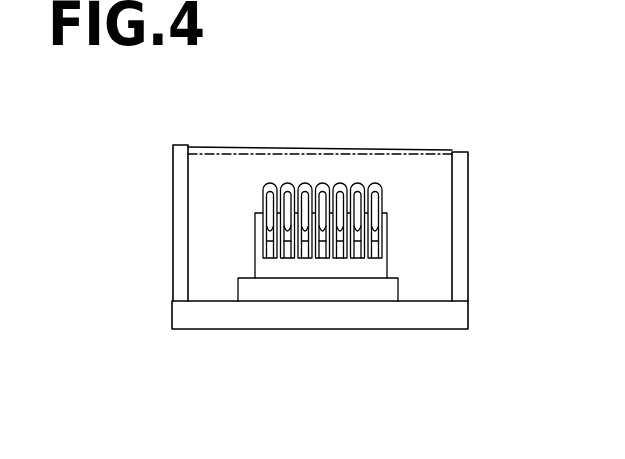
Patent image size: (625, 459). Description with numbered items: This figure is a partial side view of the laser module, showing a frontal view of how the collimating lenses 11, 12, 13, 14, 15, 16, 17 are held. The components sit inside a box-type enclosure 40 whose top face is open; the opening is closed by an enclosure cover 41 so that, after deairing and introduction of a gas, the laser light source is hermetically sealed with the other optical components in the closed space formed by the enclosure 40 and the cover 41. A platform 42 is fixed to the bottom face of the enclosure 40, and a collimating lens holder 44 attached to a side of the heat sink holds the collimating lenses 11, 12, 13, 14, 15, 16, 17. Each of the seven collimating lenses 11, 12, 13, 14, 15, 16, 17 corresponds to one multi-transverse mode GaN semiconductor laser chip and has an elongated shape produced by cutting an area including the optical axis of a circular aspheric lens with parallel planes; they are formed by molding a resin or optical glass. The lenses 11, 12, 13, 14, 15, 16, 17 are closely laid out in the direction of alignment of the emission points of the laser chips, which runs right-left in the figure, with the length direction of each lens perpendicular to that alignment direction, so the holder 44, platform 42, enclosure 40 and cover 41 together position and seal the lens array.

The collimating lens 11 is at (383, 207).
The collimating lens 12 is at (377, 196).
The collimating lens 13 is at (338, 233).
The collimating lens 14 is at (322, 233).
The collimating lens 15 is at (303, 232).
The collimating lens 16 is at (287, 190).
The collimating lens 17 is at (263, 203).
The enclosure 40 is at (450, 322).
The enclosure cover 41 is at (199, 147).
The platform 42 is at (398, 297).
The collimating lens holder 44 is at (387, 260).